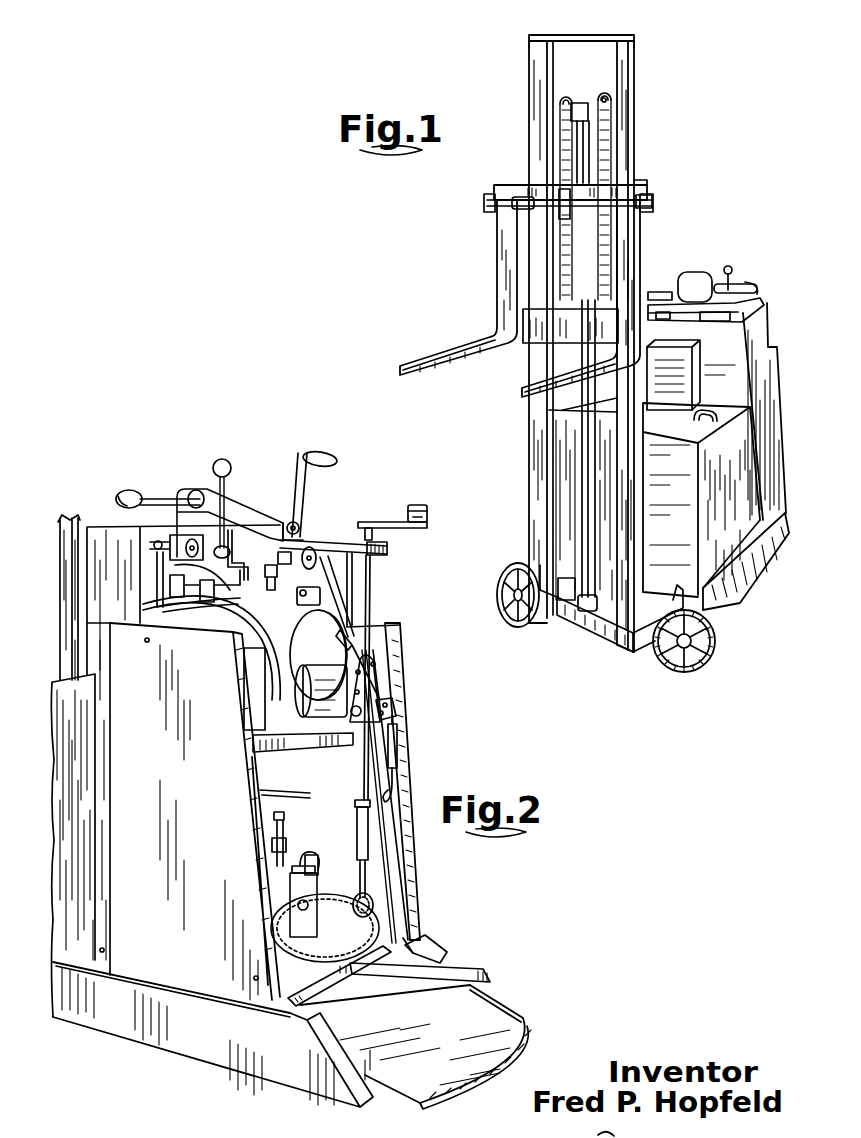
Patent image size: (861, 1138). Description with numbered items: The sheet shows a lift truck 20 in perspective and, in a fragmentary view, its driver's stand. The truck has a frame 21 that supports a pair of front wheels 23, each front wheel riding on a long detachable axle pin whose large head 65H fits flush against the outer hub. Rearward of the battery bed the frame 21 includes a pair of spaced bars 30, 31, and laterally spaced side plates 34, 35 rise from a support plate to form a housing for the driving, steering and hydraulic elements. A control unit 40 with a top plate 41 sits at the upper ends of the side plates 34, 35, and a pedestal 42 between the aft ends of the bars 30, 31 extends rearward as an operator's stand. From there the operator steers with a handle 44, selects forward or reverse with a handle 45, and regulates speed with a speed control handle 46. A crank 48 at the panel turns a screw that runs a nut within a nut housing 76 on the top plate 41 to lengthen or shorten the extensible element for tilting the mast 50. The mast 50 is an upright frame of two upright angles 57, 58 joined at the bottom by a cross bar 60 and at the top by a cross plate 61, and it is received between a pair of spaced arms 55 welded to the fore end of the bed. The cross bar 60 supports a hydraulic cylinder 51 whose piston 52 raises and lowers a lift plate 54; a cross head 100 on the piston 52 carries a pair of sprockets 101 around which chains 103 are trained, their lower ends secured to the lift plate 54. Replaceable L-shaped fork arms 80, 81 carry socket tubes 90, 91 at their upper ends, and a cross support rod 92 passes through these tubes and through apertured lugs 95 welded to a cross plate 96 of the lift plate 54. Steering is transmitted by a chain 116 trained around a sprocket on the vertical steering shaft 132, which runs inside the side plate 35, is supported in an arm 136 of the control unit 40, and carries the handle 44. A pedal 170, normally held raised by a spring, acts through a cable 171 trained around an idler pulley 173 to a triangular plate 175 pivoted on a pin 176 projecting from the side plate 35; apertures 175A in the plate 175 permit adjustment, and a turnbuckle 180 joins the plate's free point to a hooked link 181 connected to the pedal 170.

In FIG. 1, the lift truck 20 is at (691, 122).
In FIG. 2, the lift truck 20 is at (166, 438).
In FIG. 1, the frame 21 is at (750, 605).
In FIG. 1, the front wheels 23 is at (527, 622).
In FIG. 2, the spaced bar 30 is at (212, 1046).
In FIG. 2, the spaced bar 31 is at (440, 940).
In FIG. 2, the side plate 34 is at (176, 838).
In FIG. 2, the side plate 35 is at (401, 702).
In FIG. 2, the control unit 40 is at (118, 530).
In FIG. 1, the top plate 41 is at (764, 302).
In FIG. 2, the top plate 41 is at (112, 530).
In FIG. 2, the pedestal 42 is at (452, 1043).
In FIG. 2, the handle 44 is at (390, 520).
In FIG. 1, the handle 45 is at (730, 268).
In FIG. 2, the handle 45 is at (226, 478).
In FIG. 1, the speed control handle 46 is at (748, 290).
In FIG. 2, the speed control handle 46 is at (146, 492).
In FIG. 2, the crank 48 is at (305, 492).
In FIG. 1, the mast 50 is at (535, 450).
In FIG. 1, the hydraulic cylinder 51 is at (596, 520).
In FIG. 1, the piston 52 is at (575, 143).
In FIG. 1, the lift plate 54 is at (640, 186).
In FIG. 1, the spaced arms 55 is at (530, 567).
In FIG. 1, the upright angle 57 is at (640, 475).
In FIG. 1, the upright angle 58 is at (543, 493).
In FIG. 1, the cross bar 60 is at (585, 622).
In FIG. 1, the cross plate 61 is at (545, 36).
In FIG. 1, the head 65H is at (692, 645).
In FIG. 1, the nut housing 76 is at (663, 298).
In FIG. 1, the fork arm 80 is at (508, 282).
In FIG. 1, the fork arm 81 is at (645, 244).
In FIG. 1, the socket tube 90 is at (506, 184).
In FIG. 1, the socket tube 91 is at (645, 203).
In FIG. 1, the cross support rod 92 is at (535, 208).
In FIG. 1, the lugs 95 is at (492, 200).
In FIG. 1, the cross plate 96 is at (566, 216).
In FIG. 1, the cross head 100 is at (583, 108).
In FIG. 1, the sprockets 101 is at (561, 100).
In FIG. 1, the chains 103 is at (560, 126).
In FIG. 2, the chain 116 is at (342, 955).
In FIG. 2, the steering shaft 132 is at (358, 866).
In FIG. 2, the arm 136 is at (384, 549).
In FIG. 2, the pedal 170 is at (490, 960).
In FIG. 2, the cable 171 is at (356, 628).
In FIG. 2, the idler pulley 173 is at (300, 602).
In FIG. 2, the triangular plate 175 is at (378, 688).
In FIG. 2, the apertures 175A is at (396, 710).
In FIG. 2, the pin 176 is at (342, 745).
In FIG. 2, the turnbuckle 180 is at (397, 763).
In FIG. 2, the link 181 is at (400, 845).